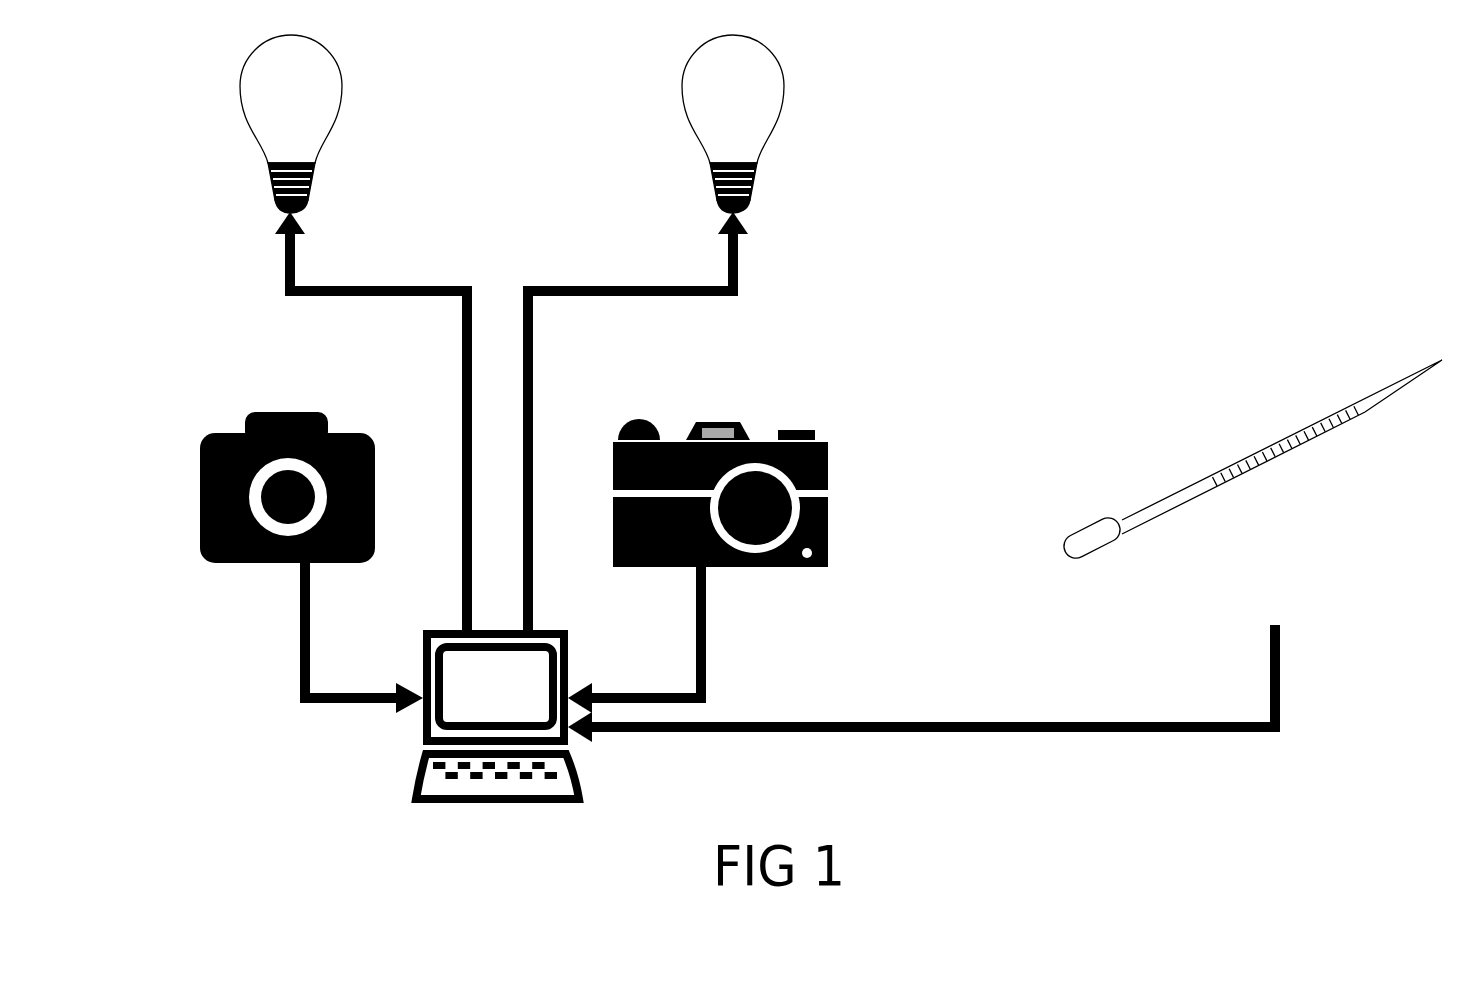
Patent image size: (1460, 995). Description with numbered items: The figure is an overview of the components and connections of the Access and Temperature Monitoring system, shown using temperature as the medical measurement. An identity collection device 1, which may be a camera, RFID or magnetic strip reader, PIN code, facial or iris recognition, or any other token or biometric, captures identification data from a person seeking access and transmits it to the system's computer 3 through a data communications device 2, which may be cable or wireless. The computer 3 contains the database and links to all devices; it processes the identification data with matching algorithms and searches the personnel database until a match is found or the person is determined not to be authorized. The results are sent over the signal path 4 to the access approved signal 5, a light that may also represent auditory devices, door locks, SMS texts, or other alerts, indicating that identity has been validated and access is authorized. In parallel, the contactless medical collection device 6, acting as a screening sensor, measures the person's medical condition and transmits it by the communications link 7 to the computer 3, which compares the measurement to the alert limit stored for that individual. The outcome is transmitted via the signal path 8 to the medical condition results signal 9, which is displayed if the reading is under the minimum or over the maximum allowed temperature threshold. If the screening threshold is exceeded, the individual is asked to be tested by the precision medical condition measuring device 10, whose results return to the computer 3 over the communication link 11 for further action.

The identity collection device 1 is at (200, 487).
The data communications device 2 is at (300, 643).
The computer 3 is at (418, 762).
The signal from the computer to the access approved signal 4 is at (363, 287).
The access approved signal 5 is at (240, 90).
The contactless medical collection device 6 is at (830, 504).
The communications link 7 is at (705, 645).
The signal from the computer to the medical condition results signal 8 is at (610, 287).
The medical condition results signal 9 is at (782, 113).
The precision medical condition measuring device 10 is at (1298, 420).
The communication link from the precision medical condition measuring device to the 11 is at (1067, 722).